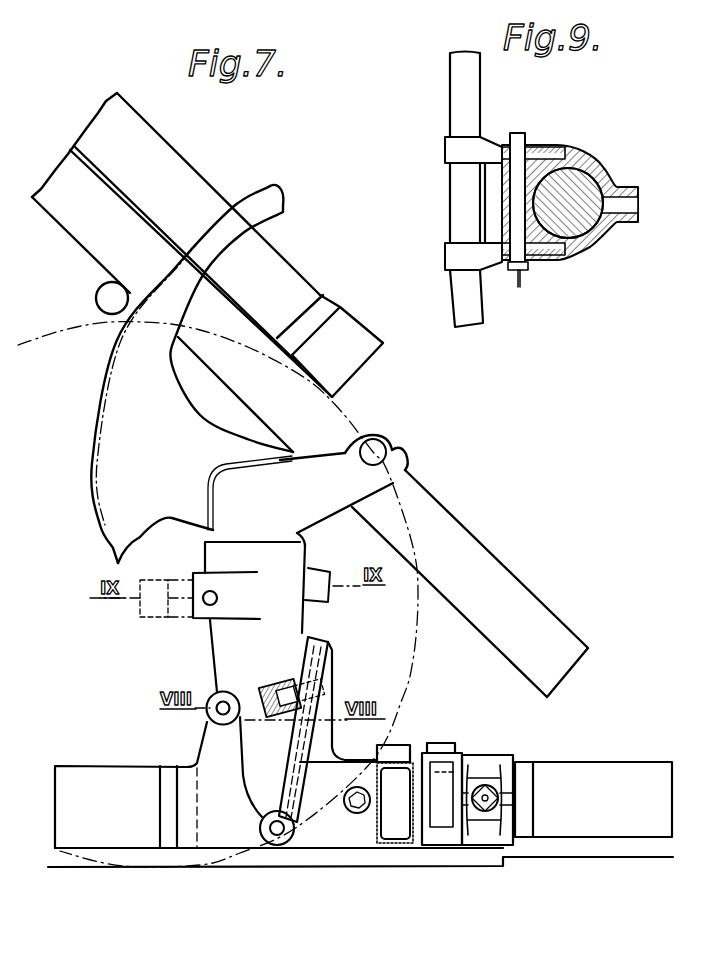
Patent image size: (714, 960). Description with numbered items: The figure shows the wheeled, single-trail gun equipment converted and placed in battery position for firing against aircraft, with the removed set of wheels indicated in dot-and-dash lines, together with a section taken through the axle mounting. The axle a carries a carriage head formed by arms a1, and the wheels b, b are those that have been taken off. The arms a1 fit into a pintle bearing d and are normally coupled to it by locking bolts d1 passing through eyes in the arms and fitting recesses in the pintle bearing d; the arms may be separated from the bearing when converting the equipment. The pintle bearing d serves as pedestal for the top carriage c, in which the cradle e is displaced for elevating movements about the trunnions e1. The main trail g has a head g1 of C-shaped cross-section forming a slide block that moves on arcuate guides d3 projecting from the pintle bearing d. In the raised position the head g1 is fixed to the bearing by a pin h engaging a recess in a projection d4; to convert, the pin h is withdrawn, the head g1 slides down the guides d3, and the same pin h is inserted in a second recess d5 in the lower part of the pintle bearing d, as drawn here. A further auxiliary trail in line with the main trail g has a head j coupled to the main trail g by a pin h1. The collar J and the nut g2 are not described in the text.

In FIG. 7, the axle a is at (148, 617).
In FIG. 9, the axle a is at (470, 110).
In FIG. 7, the collar on rod J is at (352, 327).
In FIG. 7, the wheels b is at (413, 670).
In FIG. 7, the trunnions e1 is at (380, 446).
In FIG. 7, the top carriage c is at (397, 463).
In FIG. 7, the cradle e is at (517, 587).
In FIG. 7, the pintle bearing d is at (223, 653).
In FIG. 9, the pintle bearing d is at (597, 165).
In FIG. 9, the locking bolts d1 is at (518, 140).
In FIG. 9, the arms a1 is at (557, 147).
In FIG. 7, the guides d3 is at (323, 628).
In FIG. 7, the projection d4 is at (315, 577).
In FIG. 7, the second recess d5 is at (278, 715).
In FIG. 7, the pin h is at (330, 707).
In FIG. 7, the pin h1 is at (277, 833).
In FIG. 7, the head j is at (110, 773).
In FIG. 7, the main trail g is at (618, 767).
In FIG. 7, the head g1 is at (343, 835).
In FIG. 7, the adjusting nuts g2 is at (498, 738).